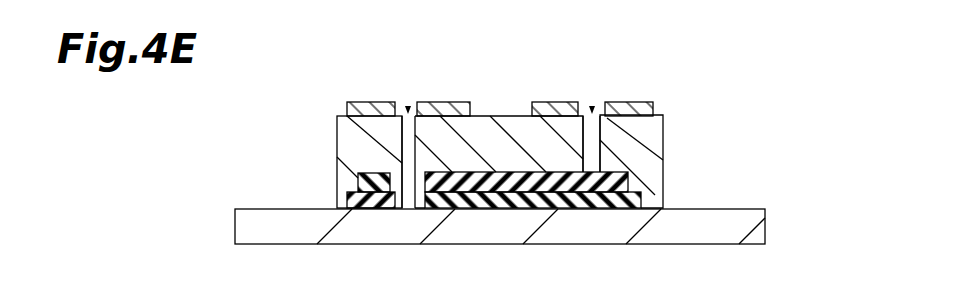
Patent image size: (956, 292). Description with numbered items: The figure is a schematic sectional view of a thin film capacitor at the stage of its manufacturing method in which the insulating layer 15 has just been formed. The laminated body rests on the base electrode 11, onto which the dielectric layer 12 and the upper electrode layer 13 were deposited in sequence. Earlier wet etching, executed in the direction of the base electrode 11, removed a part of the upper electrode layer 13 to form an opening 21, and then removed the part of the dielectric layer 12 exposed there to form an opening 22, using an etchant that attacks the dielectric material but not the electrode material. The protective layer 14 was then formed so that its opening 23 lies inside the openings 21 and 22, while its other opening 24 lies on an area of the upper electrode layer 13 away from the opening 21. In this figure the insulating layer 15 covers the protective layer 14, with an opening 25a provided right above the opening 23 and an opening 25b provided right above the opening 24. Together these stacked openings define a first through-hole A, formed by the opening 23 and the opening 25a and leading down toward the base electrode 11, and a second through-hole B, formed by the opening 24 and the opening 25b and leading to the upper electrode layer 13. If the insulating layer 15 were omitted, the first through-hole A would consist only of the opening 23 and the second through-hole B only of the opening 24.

The base electrode 11 is at (768, 226).
The dielectric layer 12 is at (645, 201).
The upper electrode layer 13 is at (628, 184).
The protective layer 14 is at (665, 135).
The insulating layer 15 is at (348, 106).
The opening 21 is at (393, 174).
The opening 22 is at (406, 200).
The opening 23 is at (400, 147).
The opening 24 is at (600, 147).
The opening 25a is at (409, 112).
The opening 25b is at (593, 112).
The first through-hole A is at (407, 110).
The second through-hole B is at (591, 110).